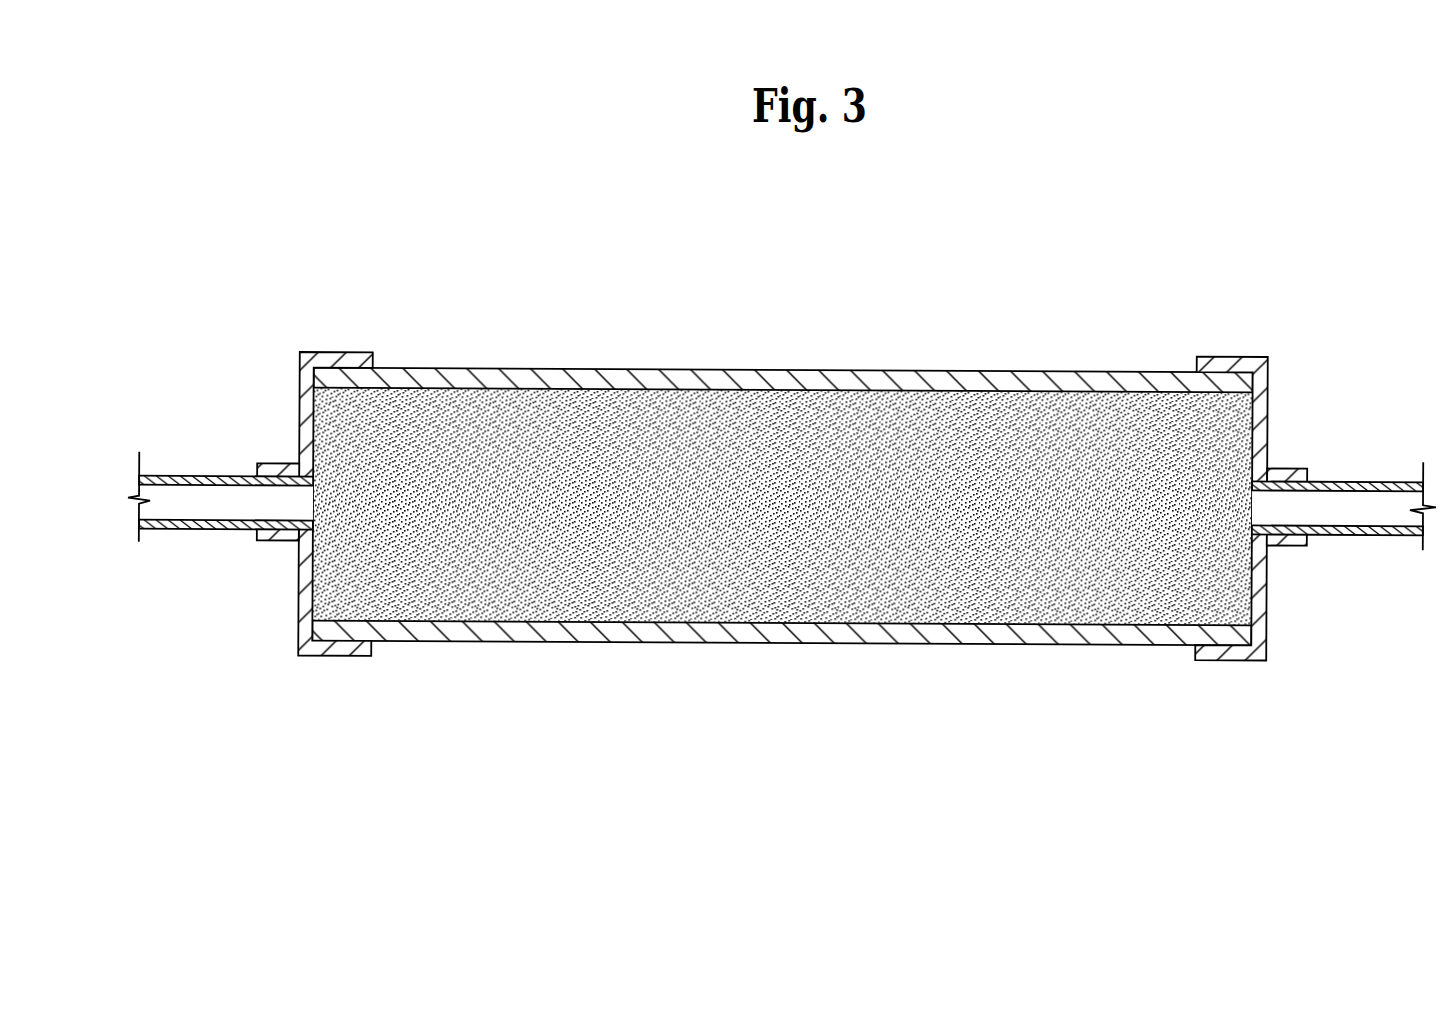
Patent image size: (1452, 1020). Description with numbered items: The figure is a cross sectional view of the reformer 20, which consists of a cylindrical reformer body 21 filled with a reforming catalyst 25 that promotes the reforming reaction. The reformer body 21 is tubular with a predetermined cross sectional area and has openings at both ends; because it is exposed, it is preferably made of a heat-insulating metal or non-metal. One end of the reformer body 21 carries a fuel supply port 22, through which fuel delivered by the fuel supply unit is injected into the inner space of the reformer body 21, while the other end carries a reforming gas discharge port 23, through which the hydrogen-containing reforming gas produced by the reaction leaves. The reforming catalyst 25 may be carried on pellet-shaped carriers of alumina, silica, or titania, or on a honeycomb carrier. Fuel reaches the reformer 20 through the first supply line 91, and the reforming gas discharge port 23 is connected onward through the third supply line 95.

The reformer 20 is at (786, 247).
The reformer body 21 is at (707, 371).
The fuel supply port 22 is at (268, 464).
The reforming gas discharge port 23 is at (1290, 473).
The reforming catalyst 25 is at (620, 397).
The first supply line 91 is at (190, 477).
The third supply line 95 is at (1360, 487).